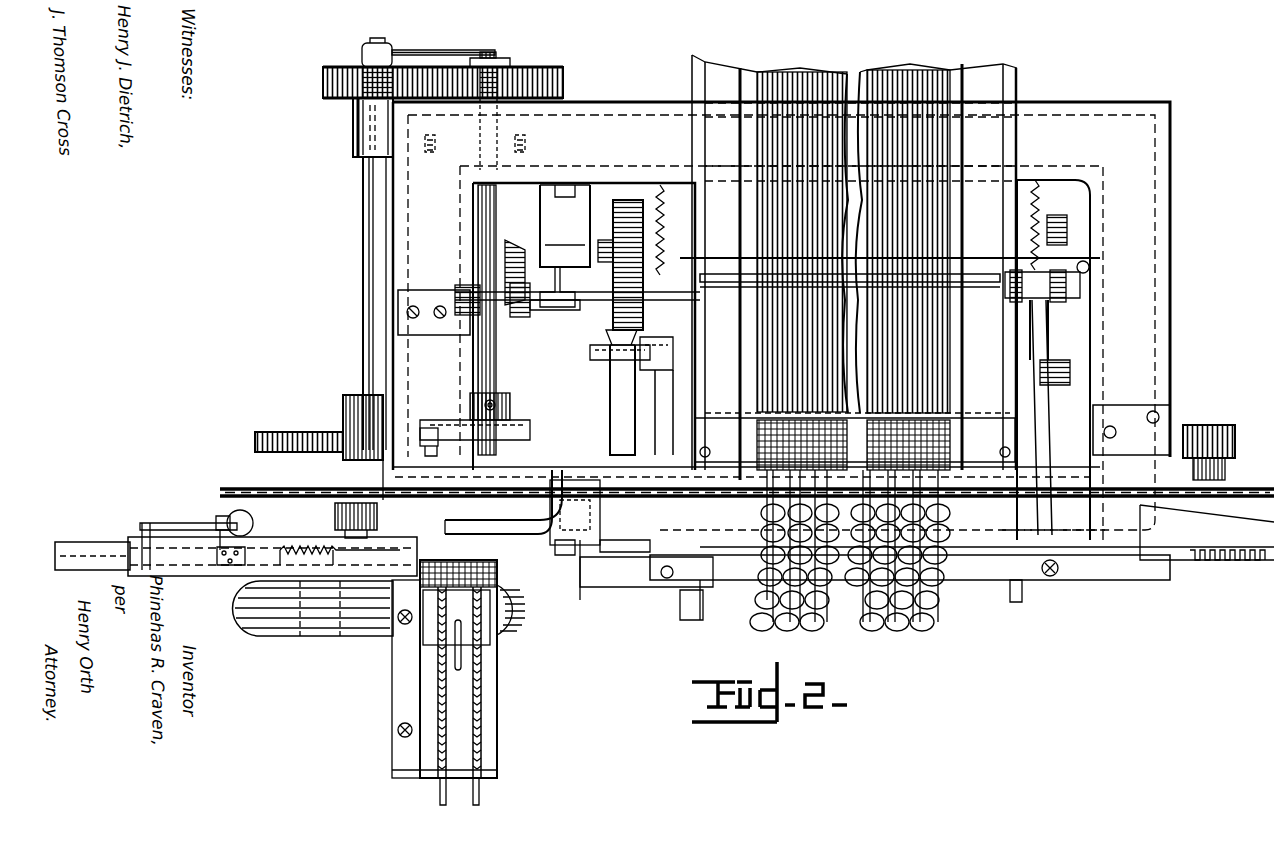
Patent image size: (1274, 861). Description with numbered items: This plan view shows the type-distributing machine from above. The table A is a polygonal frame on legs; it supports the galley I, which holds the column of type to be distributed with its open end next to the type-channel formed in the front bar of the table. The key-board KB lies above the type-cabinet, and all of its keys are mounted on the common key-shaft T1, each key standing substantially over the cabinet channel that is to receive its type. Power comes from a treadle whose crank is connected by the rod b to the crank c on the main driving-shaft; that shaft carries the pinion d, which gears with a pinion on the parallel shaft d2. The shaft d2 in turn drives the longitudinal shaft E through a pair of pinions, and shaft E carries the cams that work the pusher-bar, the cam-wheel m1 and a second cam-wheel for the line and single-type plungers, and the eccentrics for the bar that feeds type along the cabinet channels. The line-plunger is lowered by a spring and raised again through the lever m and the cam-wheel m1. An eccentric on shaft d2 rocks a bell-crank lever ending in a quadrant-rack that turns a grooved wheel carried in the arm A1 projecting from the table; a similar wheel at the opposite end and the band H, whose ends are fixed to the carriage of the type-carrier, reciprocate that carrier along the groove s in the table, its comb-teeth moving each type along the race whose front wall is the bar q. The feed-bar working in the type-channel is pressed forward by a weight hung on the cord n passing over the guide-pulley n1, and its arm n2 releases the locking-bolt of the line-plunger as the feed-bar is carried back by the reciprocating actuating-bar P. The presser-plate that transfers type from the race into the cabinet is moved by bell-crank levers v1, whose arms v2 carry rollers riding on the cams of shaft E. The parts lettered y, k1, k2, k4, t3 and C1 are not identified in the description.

The table A is at (1135, 150).
The lever m is at (584, 326).
The pinion d is at (355, 67).
The parallel shaft d2 is at (505, 58).
The rod b is at (443, 40).
The crank c is at (388, 46).
The key-shaft T1 is at (735, 447).
The longitudinal shaft E is at (992, 255).
The bell-crank lever v1 is at (1042, 435).
The bell-crank lever arm v2 is at (660, 190).
The gear y is at (620, 265).
The cam-wheel m1 is at (430, 522).
The arm A1 is at (402, 414).
The bracket k1 is at (450, 420).
The gear k2 is at (310, 432).
The band H is at (747, 503).
The right gear k4 is at (1200, 425).
The bar q is at (927, 572).
The groove s is at (572, 478).
The lever t3 is at (600, 350).
The key-board KB is at (841, 559).
The actuating-bar P is at (92, 556).
The cord n is at (180, 525).
The guide-pulley n1 is at (290, 550).
The arm n2 is at (340, 555).
The cylinder C1 is at (312, 608).
The galley I is at (510, 752).